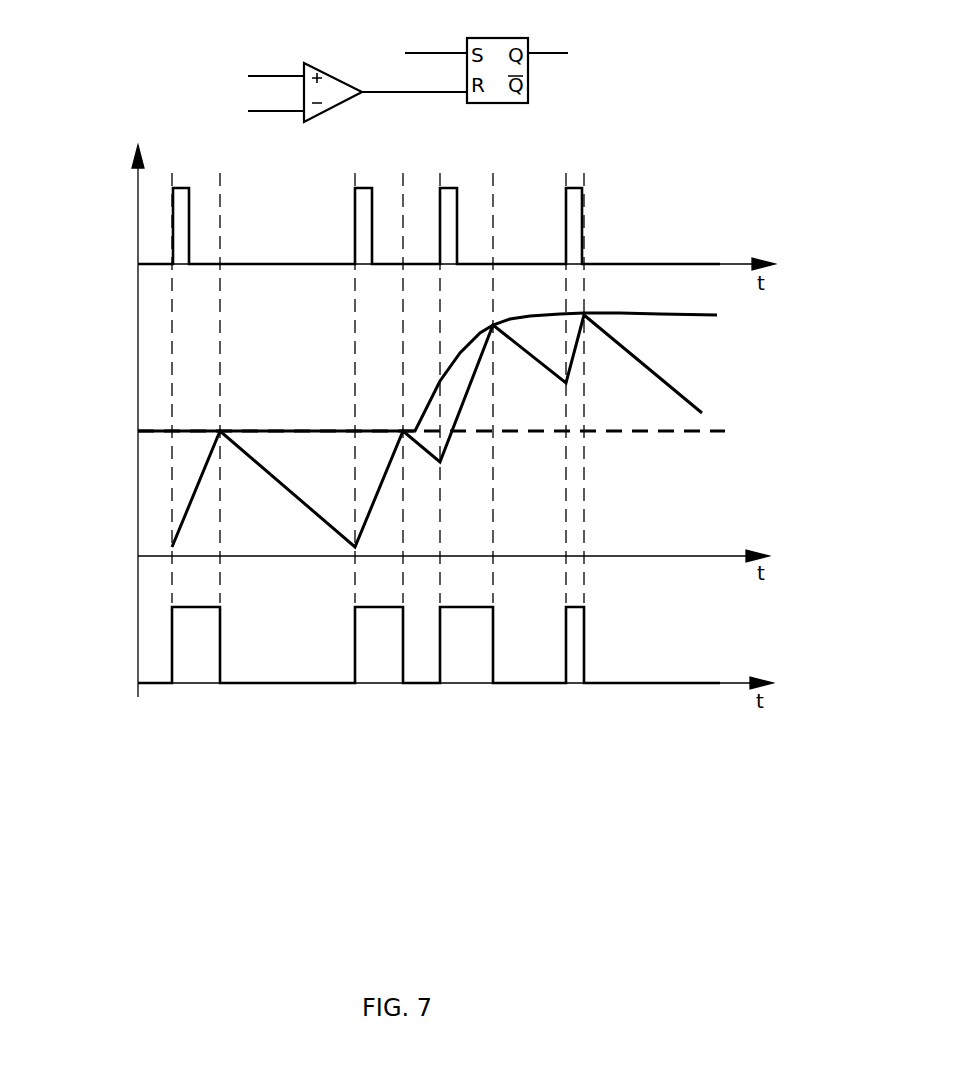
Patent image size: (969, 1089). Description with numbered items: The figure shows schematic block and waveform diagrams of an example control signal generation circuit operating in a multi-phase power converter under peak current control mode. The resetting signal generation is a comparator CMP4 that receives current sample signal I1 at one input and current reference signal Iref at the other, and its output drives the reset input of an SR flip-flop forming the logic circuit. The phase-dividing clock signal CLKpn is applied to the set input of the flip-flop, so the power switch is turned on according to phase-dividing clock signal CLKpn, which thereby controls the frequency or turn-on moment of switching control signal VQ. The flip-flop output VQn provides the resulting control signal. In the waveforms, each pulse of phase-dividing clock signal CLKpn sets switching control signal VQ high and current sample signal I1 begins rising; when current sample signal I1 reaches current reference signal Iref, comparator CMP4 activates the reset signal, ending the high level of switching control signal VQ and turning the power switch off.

The comparator CMP4 is at (333, 92).
The current sample signal I1 is at (733, 388).
The current reference signal Iref is at (707, 333).
The phase-dividing clock signal CLKpn is at (382, 142).
The switching control signal VQ is at (403, 645).
The switching control signal output VQn is at (576, 58).